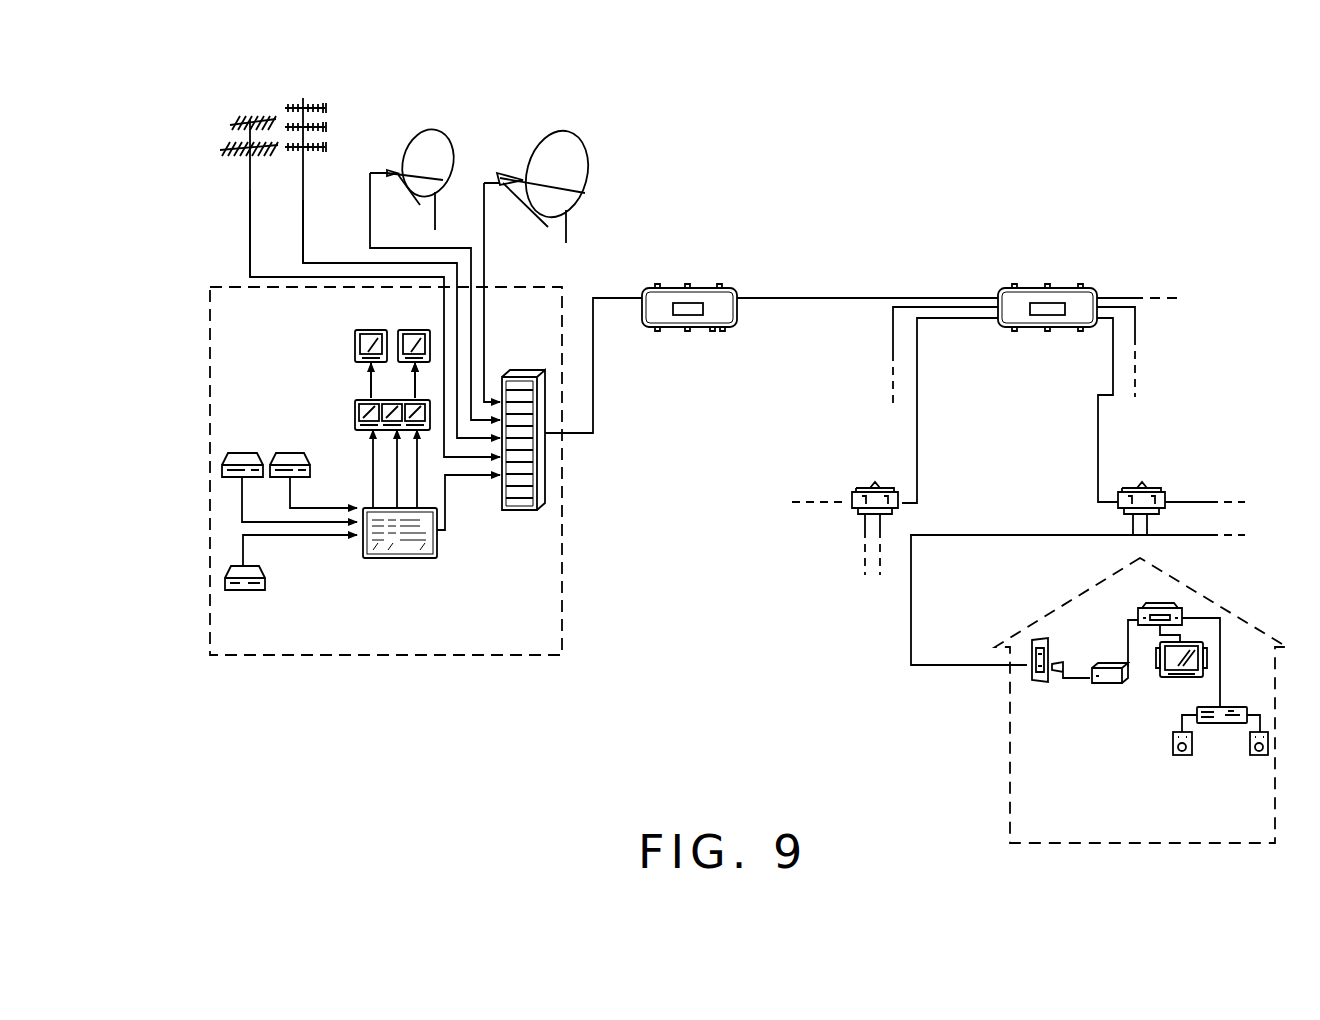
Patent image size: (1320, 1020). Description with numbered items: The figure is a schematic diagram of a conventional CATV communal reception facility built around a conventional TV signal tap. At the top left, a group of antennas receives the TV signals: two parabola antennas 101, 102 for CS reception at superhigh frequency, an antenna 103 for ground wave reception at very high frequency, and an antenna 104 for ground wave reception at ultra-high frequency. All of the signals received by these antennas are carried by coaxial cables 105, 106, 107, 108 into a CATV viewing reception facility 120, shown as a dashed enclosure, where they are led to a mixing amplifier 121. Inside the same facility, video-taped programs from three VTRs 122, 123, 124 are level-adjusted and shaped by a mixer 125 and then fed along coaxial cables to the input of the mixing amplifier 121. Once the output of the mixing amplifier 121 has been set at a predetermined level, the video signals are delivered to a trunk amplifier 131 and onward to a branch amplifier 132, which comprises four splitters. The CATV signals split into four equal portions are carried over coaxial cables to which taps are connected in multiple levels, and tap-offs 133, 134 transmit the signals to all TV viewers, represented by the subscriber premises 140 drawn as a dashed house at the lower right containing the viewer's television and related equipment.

The parabola antenna 101 is at (570, 122).
The parabola antenna 102 is at (432, 122).
The antenna 103 is at (243, 108).
The antenna 104 is at (310, 95).
The coaxial cable 105 is at (490, 212).
The coaxial cable 106 is at (373, 192).
The coaxial cable 107 is at (248, 190).
The coaxial cable 108 is at (307, 193).
The CATV viewing reception facility 120 is at (478, 647).
The mixing amplifier 121 is at (528, 470).
The VTR 122 is at (250, 593).
The VTR 123 is at (242, 452).
The VTR 124 is at (290, 452).
The mixer 125 is at (400, 560).
The trunk amplifier 131 is at (678, 287).
The branch amplifier 132 is at (1038, 285).
The tap-off 133 is at (1158, 487).
The tap-off 134 is at (853, 515).
The subscriber premises 140 is at (1033, 755).